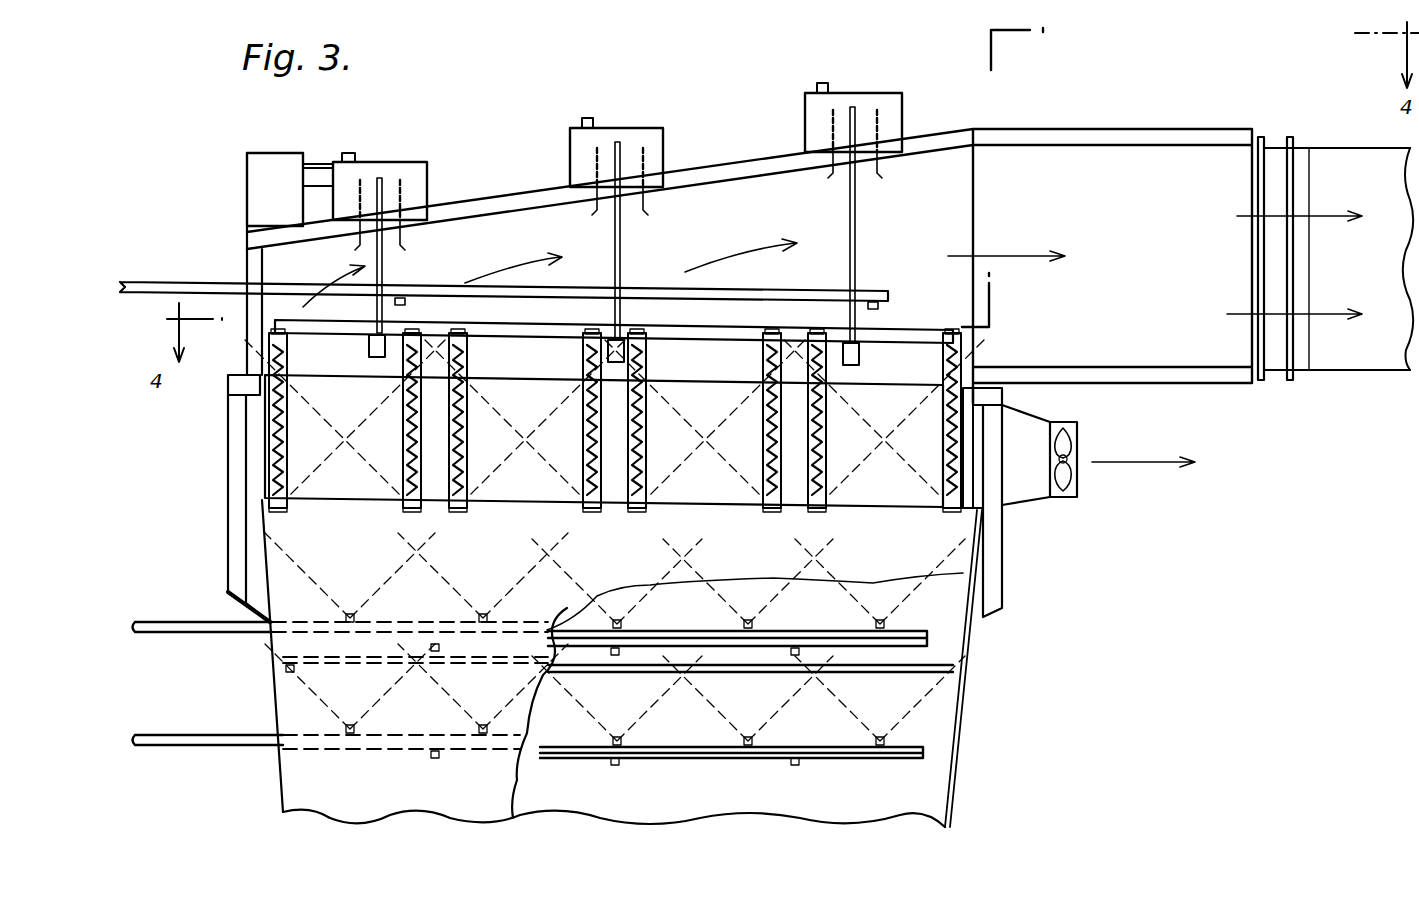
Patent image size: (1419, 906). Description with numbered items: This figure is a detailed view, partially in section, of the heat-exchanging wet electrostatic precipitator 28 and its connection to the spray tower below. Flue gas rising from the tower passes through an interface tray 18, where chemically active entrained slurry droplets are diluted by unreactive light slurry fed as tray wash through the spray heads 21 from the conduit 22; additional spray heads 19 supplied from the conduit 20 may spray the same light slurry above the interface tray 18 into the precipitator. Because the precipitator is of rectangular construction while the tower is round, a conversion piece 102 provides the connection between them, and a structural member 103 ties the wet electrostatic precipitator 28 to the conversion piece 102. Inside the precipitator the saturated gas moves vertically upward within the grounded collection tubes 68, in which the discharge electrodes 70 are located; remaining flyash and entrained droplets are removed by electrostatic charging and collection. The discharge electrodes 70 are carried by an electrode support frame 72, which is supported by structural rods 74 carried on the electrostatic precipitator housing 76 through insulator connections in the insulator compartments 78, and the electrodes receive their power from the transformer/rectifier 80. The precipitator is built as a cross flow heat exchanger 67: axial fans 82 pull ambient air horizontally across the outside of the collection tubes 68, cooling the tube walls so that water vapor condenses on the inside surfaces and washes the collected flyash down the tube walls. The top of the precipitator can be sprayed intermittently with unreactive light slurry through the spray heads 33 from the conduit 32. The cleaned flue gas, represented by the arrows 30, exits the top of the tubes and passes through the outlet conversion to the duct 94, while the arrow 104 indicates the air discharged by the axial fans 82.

The interface tray 18 is at (858, 674).
The spray heads 19 is at (480, 618).
The conduit 20 is at (155, 633).
The spray heads 21 is at (745, 738).
The conduit 22 is at (175, 748).
The wet electrostatic precipitator 28 is at (230, 522).
The flue gas flow arrow 30 is at (520, 262).
The conduit 32 is at (150, 280).
The spray heads 33 is at (406, 301).
The cross flow heat exchanger 67 is at (1035, 503).
The collection tubes 68 is at (466, 490).
The discharge electrodes 70 is at (467, 358).
The electrode support frame 72 is at (720, 328).
The structural rods 74 is at (382, 262).
The electrostatic precipitator housing 76 is at (247, 242).
The insulator compartments 78 is at (415, 162).
The transformer/rectifier 80 is at (268, 155).
The axial fans 82 is at (1080, 430).
The duct 94 is at (1364, 375).
The conversion piece 102 is at (953, 713).
The structural member 103 is at (998, 593).
The exhaust flow 104 is at (1163, 467).